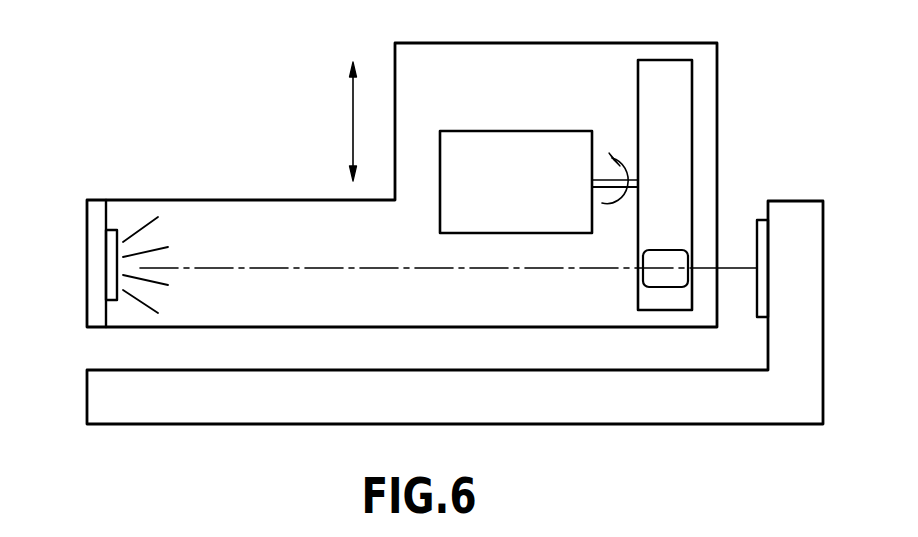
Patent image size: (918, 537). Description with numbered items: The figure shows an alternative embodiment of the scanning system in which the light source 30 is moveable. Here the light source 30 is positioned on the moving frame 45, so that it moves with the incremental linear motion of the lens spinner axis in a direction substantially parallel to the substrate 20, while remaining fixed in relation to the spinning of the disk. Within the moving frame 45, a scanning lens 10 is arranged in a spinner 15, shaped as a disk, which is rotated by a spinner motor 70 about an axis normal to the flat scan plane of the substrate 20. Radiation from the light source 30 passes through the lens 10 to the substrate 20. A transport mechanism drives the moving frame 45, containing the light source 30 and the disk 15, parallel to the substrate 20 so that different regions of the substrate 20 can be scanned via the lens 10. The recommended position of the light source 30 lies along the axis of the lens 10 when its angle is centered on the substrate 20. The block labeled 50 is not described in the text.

The scanning lens 10 is at (665, 279).
The spinner 15 is at (669, 68).
The substrate 20 is at (757, 222).
The light source 30 is at (108, 263).
The moving frame 45 is at (503, 52).
The base 50 is at (238, 412).
The spinner motor 70 is at (449, 137).